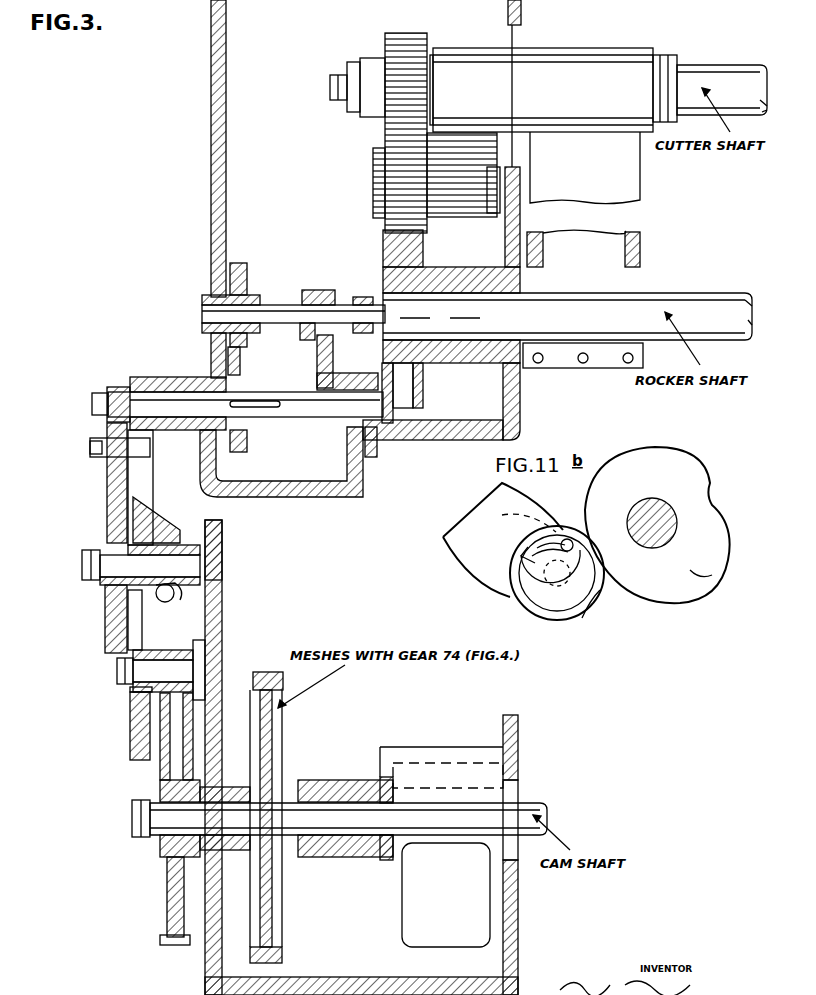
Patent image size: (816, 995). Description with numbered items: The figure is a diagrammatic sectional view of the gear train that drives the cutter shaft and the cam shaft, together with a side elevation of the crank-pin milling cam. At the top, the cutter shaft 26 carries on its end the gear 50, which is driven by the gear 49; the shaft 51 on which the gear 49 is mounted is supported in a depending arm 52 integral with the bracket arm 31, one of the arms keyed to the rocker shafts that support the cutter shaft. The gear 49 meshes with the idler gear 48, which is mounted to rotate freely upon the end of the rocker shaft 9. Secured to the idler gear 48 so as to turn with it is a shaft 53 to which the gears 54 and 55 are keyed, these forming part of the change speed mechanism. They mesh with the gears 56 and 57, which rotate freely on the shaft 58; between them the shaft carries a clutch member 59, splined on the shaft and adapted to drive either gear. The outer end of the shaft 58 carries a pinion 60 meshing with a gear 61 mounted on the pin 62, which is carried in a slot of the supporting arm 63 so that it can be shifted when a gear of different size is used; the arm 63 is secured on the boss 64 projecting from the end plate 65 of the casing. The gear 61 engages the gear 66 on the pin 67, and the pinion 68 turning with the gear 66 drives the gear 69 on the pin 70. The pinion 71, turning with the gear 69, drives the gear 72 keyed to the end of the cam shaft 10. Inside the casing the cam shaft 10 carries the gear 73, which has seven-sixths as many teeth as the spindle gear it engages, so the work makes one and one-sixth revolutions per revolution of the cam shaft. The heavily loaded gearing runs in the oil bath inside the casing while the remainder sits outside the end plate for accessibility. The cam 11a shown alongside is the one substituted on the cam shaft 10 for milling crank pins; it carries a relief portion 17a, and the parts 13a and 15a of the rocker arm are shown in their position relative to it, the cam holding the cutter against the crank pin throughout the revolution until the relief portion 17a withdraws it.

In FIG. 3, the rocker shaft 9 is at (697, 302).
In FIG. 3, the cam shaft 10 is at (430, 818).
In FIG. 11B, the cam shaft 10 is at (655, 545).
In FIG. 3, the cutter shaft 26 is at (732, 65).
In FIG. 3, the bracket arm 31 is at (622, 178).
In FIG. 3, the idler gear 48 is at (410, 405).
In FIG. 3, the gear 49 is at (400, 200).
In FIG. 3, the gear 50 is at (400, 36).
In FIG. 3, the shaft 51 is at (375, 165).
In FIG. 3, the depending arm 52 is at (452, 205).
In FIG. 3, the shaft 53 is at (287, 305).
In FIG. 3, the gear 54 is at (228, 278).
In FIG. 3, the gear 55 is at (326, 294).
In FIG. 3, the gear 56 is at (232, 368).
In FIG. 3, the gear 57 is at (318, 363).
In FIG. 3, the shaft 58 is at (170, 395).
In FIG. 3, the clutch member 59 is at (265, 420).
In FIG. 3, the pinion 60 is at (110, 390).
In FIG. 3, the gear 61 is at (107, 467).
In FIG. 3, the pin 62 is at (98, 447).
In FIG. 3, the supporting arm 63 is at (168, 527).
In FIG. 3, the boss 64 is at (185, 592).
In FIG. 3, the end plate 65 is at (223, 543).
In FIG. 3, the gear 66 is at (107, 642).
In FIG. 3, the pin 67 is at (110, 563).
In FIG. 3, the pinion 68 is at (128, 537).
In FIG. 3, the gear 69 is at (130, 745).
In FIG. 3, the pin 70 is at (115, 668).
In FIG. 3, the pinion 71 is at (172, 655).
In FIG. 3, the gear 72 is at (170, 920).
In FIG. 3, the gear 73 is at (275, 737).
In FIG. 11B, the cam 11a is at (695, 570).
In FIG. 11B, the rocker arm hub 13a is at (578, 623).
In FIG. 11B, the rocker arm 15a is at (480, 570).
In FIG. 11B, the relief portion 17a is at (708, 488).